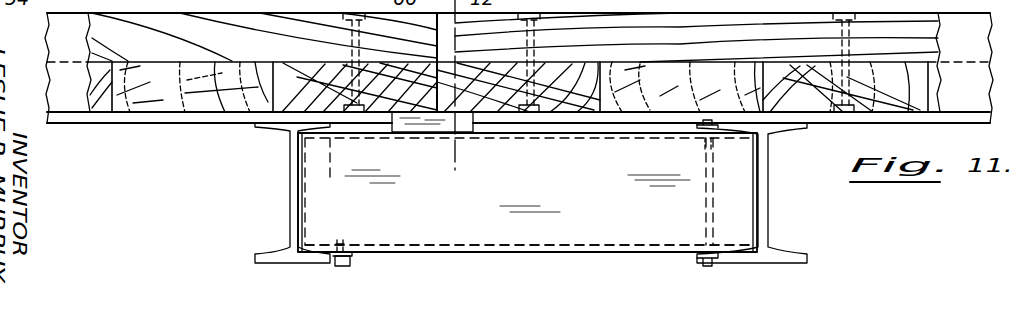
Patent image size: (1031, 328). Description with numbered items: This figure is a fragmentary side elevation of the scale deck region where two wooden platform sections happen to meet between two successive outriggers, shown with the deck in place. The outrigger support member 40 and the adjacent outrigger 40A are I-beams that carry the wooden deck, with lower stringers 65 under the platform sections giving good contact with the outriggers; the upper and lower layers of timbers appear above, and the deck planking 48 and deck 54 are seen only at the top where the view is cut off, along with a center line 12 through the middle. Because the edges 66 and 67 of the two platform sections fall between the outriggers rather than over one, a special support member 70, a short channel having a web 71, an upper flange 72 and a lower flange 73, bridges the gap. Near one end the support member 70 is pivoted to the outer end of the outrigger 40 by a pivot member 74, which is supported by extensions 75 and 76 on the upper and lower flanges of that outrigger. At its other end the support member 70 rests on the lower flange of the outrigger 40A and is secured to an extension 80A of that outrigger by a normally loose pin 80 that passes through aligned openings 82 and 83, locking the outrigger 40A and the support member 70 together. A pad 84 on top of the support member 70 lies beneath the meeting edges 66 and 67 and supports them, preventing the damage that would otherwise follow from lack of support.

The center line 12 is at (457, 160).
The outrigger support member 40 is at (768, 213).
The outrigger 40A is at (290, 210).
The deck planking 48 is at (518, 31).
The deck 54 is at (17, 4).
The lower stringers 65 is at (192, 114).
The edge 66 is at (440, 12).
The edge 67 is at (432, 112).
The support member 70 is at (562, 233).
The web 71 is at (592, 194).
The upper flange 72 is at (638, 132).
The lower flange 73 is at (625, 247).
The pivot member 74 is at (713, 189).
The extension 75 is at (705, 119).
The extension 76 is at (705, 267).
The pin 80 is at (340, 264).
The extension 80A is at (360, 253).
The opening 82 is at (348, 243).
The opening 83 is at (352, 263).
The pad 84 is at (466, 121).